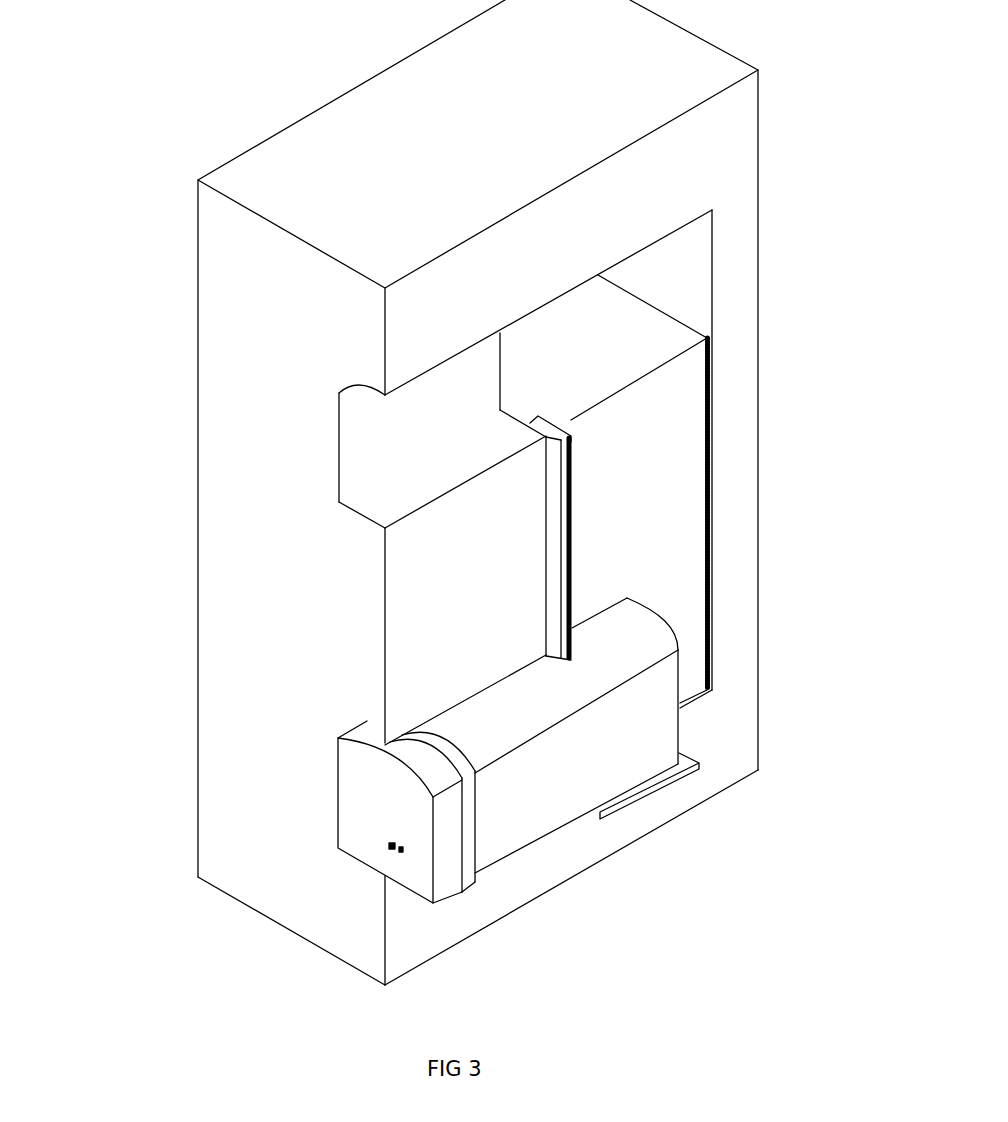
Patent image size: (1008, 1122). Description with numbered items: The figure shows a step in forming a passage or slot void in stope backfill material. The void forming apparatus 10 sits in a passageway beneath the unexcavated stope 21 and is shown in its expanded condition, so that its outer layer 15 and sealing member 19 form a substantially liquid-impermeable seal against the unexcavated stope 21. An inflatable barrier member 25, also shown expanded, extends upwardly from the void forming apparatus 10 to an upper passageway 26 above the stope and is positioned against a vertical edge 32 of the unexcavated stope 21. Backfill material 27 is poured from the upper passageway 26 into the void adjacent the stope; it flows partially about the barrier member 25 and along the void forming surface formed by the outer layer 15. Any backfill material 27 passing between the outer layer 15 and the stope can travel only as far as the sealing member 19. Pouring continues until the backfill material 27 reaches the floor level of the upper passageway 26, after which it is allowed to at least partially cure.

The void forming apparatus 10 is at (355, 821).
The outer layer 15 is at (626, 661).
The sealing member 19 is at (480, 878).
The unexcavated stope 21 is at (397, 661).
The inflatable barrier member 25 is at (547, 553).
The upper passageway 26 is at (350, 406).
The backfill material 27 is at (669, 470).
The vertical edge 32 is at (528, 467).